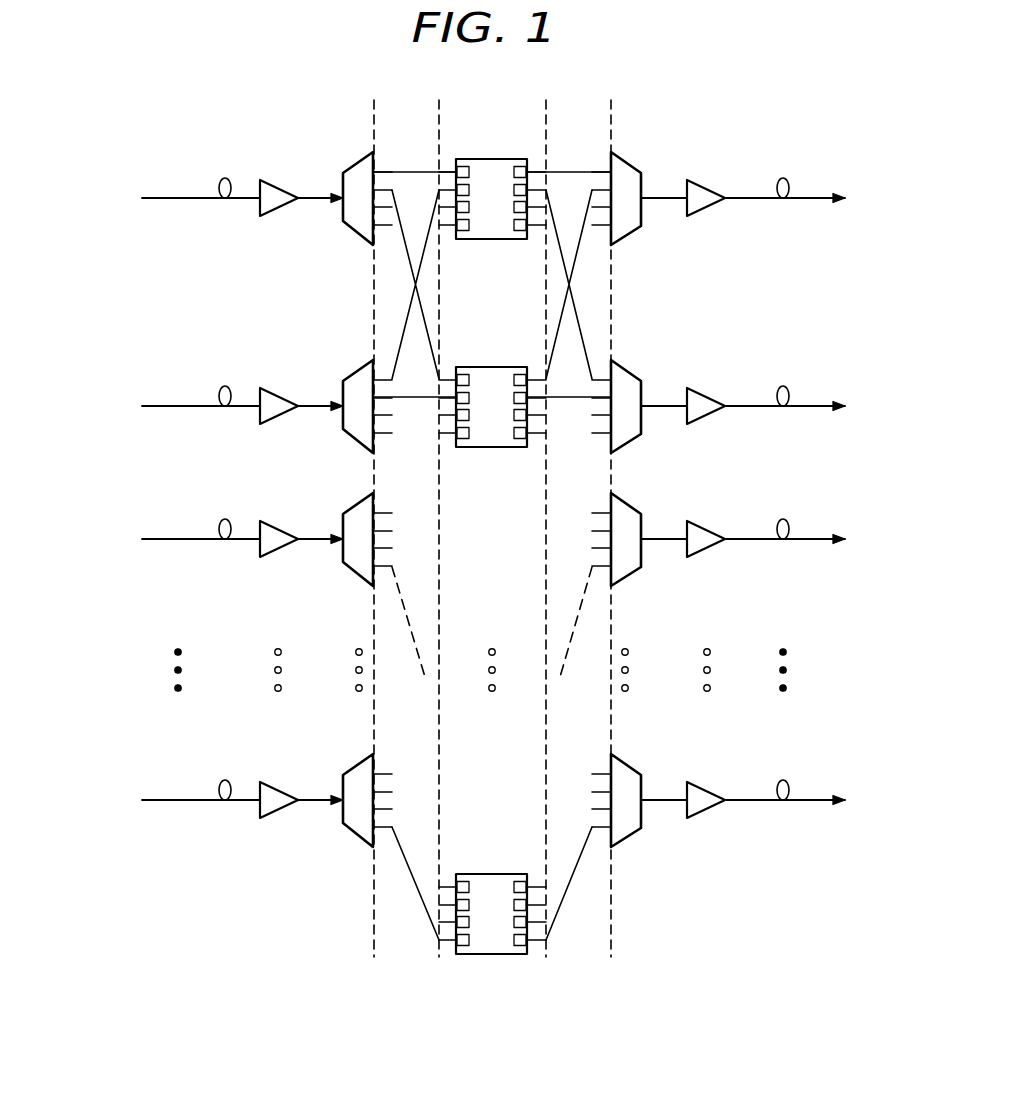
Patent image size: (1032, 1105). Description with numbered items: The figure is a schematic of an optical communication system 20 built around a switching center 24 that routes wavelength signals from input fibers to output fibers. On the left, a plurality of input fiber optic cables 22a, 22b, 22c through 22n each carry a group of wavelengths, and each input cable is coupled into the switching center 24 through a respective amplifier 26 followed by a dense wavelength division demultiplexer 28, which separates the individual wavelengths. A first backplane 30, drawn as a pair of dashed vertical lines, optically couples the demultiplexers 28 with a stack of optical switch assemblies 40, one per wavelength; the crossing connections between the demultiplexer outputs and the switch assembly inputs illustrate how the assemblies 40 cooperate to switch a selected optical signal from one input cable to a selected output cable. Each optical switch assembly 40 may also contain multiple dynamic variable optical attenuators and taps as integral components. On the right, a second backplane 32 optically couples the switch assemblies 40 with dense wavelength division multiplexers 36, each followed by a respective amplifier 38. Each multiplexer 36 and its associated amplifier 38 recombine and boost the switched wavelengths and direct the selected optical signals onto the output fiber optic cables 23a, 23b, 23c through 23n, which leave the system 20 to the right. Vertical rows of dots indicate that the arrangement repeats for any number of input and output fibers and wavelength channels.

The communication system 20 is at (238, 884).
The input fiber optic cable 22a is at (178, 201).
The input fiber optic cable 22b is at (178, 409).
The input fiber optic cable 22c is at (178, 542).
The input fiber optic cable 22n is at (178, 803).
The output fiber optic cable 23a is at (812, 197).
The output fiber optic cable 23b is at (812, 405).
The output fiber optic cable 23c is at (812, 538).
The output fiber optic cable 23n is at (812, 803).
The switching center 24 is at (365, 940).
The amplifier 26 is at (280, 180).
The dense wavelength division demultiplexer 28 is at (360, 157).
The backplane 30 is at (406, 945).
The backplane 32 is at (578, 945).
The dense wavelength division multiplexer 36 is at (624, 157).
The amplifier 38 is at (712, 188).
The optical switch assembly 40 is at (492, 159).